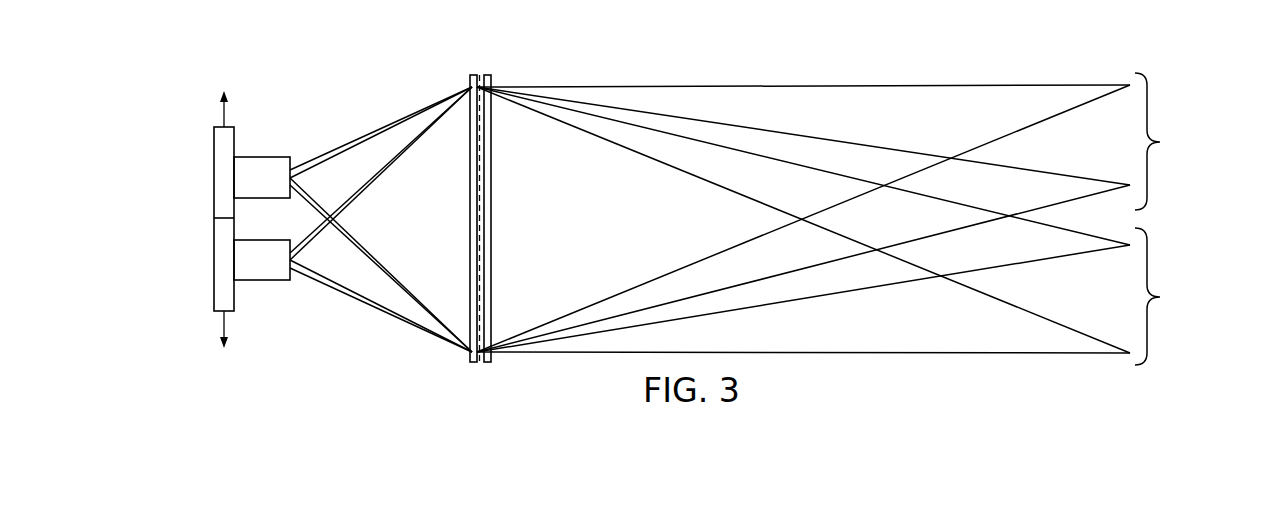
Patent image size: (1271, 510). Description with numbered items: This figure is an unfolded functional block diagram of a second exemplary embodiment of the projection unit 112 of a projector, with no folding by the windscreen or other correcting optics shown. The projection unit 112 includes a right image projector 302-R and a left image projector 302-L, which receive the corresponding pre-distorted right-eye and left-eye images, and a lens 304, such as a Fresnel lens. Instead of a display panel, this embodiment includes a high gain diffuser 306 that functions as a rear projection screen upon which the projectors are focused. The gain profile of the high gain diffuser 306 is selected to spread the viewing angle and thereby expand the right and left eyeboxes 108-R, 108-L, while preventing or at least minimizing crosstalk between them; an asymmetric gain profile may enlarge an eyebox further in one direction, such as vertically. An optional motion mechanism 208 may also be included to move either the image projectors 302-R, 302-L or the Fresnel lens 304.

The projection unit 112 is at (181, 76).
The motion mechanism 208 is at (214, 218).
The left image projector 302-L is at (268, 157).
The right image projector 302-R is at (268, 281).
The lens 304 is at (472, 74).
The high gain diffuser 306 is at (491, 76).
The right eyebox 108-R is at (1183, 141).
The left eyebox 108-L is at (1182, 296).